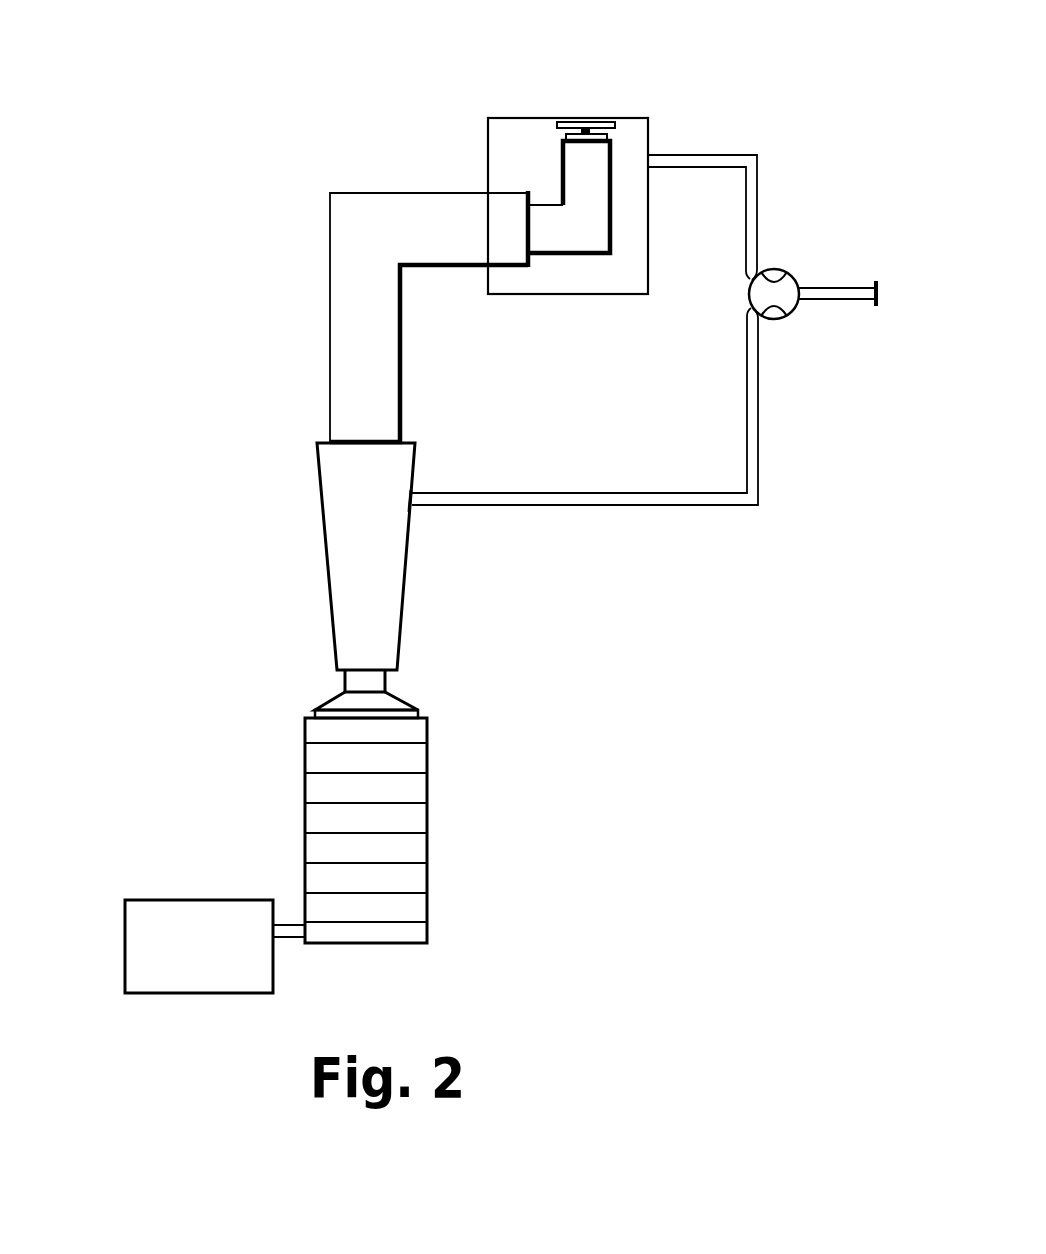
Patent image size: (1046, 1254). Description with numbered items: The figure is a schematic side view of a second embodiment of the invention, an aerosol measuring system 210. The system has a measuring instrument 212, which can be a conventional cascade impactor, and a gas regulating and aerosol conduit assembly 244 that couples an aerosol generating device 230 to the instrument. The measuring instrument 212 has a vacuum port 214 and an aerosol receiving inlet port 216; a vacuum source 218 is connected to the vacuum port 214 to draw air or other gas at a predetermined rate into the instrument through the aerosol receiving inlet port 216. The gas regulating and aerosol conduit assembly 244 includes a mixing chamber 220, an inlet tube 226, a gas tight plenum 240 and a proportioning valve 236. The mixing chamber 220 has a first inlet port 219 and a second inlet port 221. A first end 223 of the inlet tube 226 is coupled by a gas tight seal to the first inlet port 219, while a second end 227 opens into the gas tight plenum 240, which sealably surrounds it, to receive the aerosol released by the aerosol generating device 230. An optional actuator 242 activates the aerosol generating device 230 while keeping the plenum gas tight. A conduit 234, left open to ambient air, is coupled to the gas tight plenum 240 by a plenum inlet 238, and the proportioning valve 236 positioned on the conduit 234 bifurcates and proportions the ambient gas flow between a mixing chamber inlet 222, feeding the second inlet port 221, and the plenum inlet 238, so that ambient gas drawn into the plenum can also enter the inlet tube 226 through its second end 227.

The aerosol measuring system 210 is at (251, 72).
The measuring instrument 212 is at (434, 821).
The vacuum port 214 is at (292, 916).
The aerosol receiving inlet port 216 is at (391, 680).
The vacuum source 218 is at (120, 956).
The first inlet port 219 is at (326, 440).
The mixing chamber 220 is at (323, 550).
The second inlet port 221 is at (415, 522).
The mixing chamber inlet 222 is at (429, 489).
The first end 223 is at (379, 440).
The inlet tube 226 is at (323, 290).
The second end 227 is at (526, 214).
The aerosol generating device 230 is at (559, 161).
The conduit 234 is at (848, 305).
The proportioning valve 236 is at (791, 267).
The plenum inlet 238 is at (656, 149).
The gas tight plenum 240 is at (590, 300).
The actuator 242 is at (605, 117).
The gas regulating and aerosol conduit assembly 244 is at (702, 579).